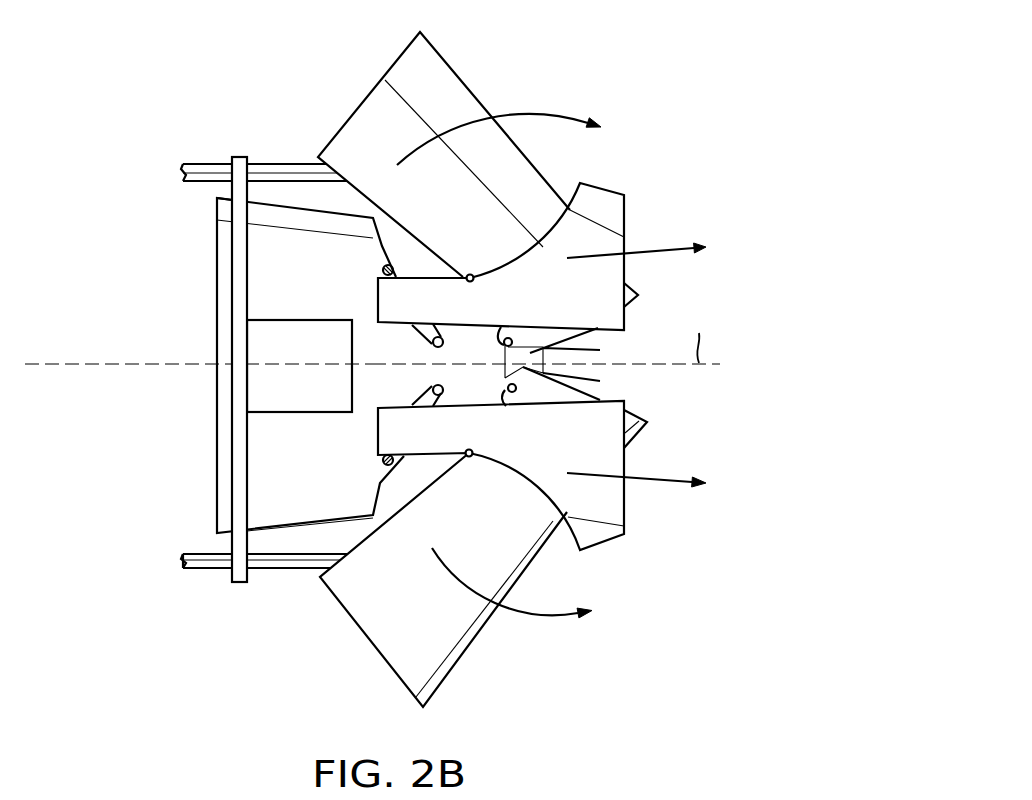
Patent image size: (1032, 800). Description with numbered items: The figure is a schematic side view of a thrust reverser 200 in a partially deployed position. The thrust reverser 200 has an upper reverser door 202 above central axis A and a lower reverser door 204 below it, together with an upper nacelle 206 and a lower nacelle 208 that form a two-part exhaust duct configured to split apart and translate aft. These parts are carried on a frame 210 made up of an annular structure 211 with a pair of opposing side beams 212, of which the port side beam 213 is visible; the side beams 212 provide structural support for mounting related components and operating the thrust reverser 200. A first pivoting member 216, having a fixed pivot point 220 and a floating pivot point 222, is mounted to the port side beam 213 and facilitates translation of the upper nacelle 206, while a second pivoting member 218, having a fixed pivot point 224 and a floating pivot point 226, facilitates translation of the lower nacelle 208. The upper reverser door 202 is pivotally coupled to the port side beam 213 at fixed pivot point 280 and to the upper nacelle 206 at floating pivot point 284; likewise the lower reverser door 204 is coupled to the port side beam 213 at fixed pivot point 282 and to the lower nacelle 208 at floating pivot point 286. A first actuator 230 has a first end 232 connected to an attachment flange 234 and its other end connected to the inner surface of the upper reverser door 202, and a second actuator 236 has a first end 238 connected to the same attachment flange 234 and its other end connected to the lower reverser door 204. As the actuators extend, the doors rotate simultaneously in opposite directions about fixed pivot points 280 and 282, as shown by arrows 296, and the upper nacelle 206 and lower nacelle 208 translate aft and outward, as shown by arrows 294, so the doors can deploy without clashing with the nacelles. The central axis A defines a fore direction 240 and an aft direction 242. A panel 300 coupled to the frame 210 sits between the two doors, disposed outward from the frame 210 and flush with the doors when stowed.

The thrust reverser 200 is at (663, 76).
The upper reverser door 202 is at (465, 85).
The lower reverser door 204 is at (494, 618).
The upper nacelle 206 is at (613, 195).
The lower nacelle 208 is at (608, 539).
The frame 210 is at (291, 482).
The annular structure 211 is at (313, 294).
The pair of opposing side beams 212 is at (560, 350).
The port side beam 213 is at (575, 381).
The first pivoting member 216 is at (432, 343).
The second pivoting member 218 is at (432, 390).
The fixed pivot point 220 is at (444, 339).
The floating pivot point 222 is at (393, 266).
The fixed pivot point 224 is at (444, 388).
The floating pivot point 226 is at (384, 463).
The first actuator 230 is at (292, 163).
The first end 232 is at (210, 148).
The attachment flange 234 is at (232, 191).
The second actuator 236 is at (282, 569).
The first end 238 is at (204, 588).
The fore direction 240 is at (62, 366).
The aft direction 242 is at (712, 366).
The fixed pivot point 280 is at (512, 338).
The fixed pivot point 282 is at (512, 394).
The floating pivot point 284 is at (472, 274).
The floating pivot point 286 is at (470, 458).
The arrows 294 is at (665, 247).
The arrows 296 is at (530, 116).
The panel 300 is at (316, 352).